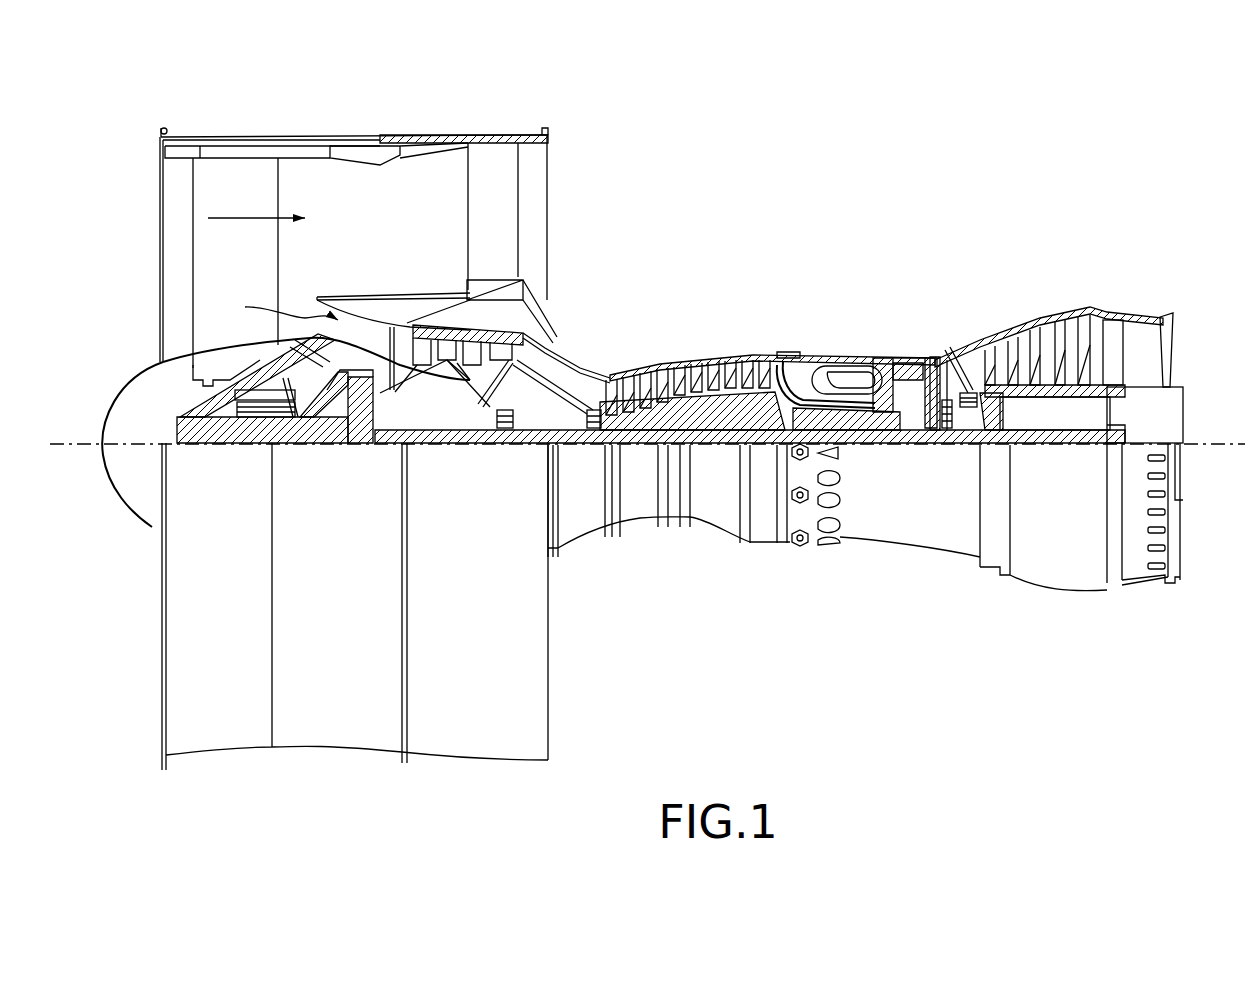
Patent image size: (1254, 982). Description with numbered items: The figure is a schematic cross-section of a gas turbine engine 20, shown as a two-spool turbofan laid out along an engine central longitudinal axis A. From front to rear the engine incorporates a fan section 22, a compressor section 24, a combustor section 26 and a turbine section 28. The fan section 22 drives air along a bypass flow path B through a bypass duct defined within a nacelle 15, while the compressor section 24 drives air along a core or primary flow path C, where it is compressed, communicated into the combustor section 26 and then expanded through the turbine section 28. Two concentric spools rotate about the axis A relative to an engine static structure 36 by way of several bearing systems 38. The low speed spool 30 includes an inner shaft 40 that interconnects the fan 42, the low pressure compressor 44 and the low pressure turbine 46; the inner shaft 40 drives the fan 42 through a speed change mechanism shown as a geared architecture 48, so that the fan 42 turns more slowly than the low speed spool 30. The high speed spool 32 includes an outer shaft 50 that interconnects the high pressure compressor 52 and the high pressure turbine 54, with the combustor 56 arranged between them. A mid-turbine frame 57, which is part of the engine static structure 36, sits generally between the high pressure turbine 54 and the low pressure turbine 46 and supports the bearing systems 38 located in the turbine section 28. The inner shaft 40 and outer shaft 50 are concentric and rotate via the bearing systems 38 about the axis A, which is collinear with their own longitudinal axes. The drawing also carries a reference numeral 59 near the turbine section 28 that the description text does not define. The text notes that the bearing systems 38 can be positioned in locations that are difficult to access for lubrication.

The gas turbine engine 20 is at (872, 148).
The fan section 22 is at (275, 125).
The nacelle 15 is at (352, 150).
The fan 42 is at (245, 256).
The compressor section 24 is at (598, 332).
The combustor section 26 is at (838, 325).
The turbine section 28 is at (1000, 290).
The low speed spool 30 is at (712, 490).
The high speed spool 32 is at (778, 398).
The engine static structure 36 is at (765, 515).
The bearing systems 38 is at (502, 444).
The inner shaft 40 is at (575, 446).
The low pressure compressor 44 is at (480, 340).
The low pressure turbine 46 is at (1048, 332).
The geared architecture 48 is at (358, 443).
The outer shaft 50 is at (838, 437).
The high pressure compressor 52 is at (718, 366).
The high pressure turbine 54 is at (908, 362).
The combustor 56 is at (856, 380).
The mid-turbine frame 57 is at (961, 342).
The airfoils / vanes 59 is at (975, 383).
The engine central longitudinal axis A is at (1230, 440).
The bypass flow path B is at (243, 215).
The core flow path C is at (280, 306).